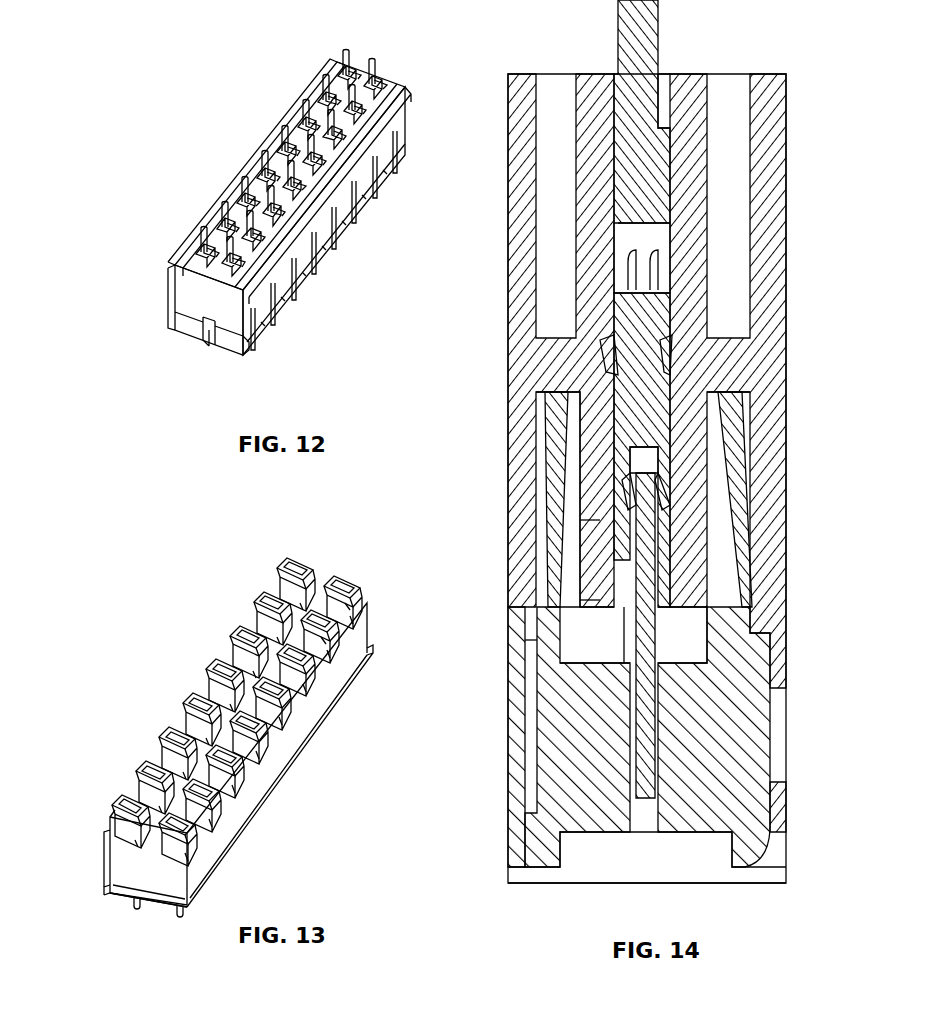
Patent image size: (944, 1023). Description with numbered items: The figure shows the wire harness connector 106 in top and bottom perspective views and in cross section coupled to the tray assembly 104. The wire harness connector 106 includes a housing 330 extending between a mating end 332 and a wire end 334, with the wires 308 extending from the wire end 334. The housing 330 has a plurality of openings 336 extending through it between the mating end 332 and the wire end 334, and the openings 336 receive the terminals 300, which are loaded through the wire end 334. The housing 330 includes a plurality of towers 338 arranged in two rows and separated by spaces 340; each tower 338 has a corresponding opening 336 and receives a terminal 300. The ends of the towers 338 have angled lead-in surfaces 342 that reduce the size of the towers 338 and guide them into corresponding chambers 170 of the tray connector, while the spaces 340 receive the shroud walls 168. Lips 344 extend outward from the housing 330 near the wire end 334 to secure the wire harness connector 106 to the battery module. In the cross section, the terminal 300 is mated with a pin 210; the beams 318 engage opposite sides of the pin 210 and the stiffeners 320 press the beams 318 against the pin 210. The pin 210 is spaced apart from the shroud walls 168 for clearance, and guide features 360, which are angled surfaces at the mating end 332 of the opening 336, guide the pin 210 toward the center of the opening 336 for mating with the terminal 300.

In FIG. 14, the tray assembly 104 is at (540, 890).
In FIG. 12, the wire harness connector 106 is at (262, 104).
In FIG. 13, the wire harness connector 106 is at (132, 697).
In FIG. 14, the wire harness connector 106 is at (597, 45).
In FIG. 14, the shroud walls 168 is at (740, 535).
In FIG. 14, the chambers 170 is at (695, 640).
In FIG. 14, the pin 210 is at (647, 632).
In FIG. 14, the terminal 300 is at (668, 372).
In FIG. 12, the wires 308 is at (340, 62).
In FIG. 13, the wires 308 is at (137, 900).
In FIG. 14, the beams 318 is at (667, 520).
In FIG. 14, the stiffeners 320 is at (670, 535).
In FIG. 12, the housing 330 is at (190, 297).
In FIG. 13, the housing 330 is at (130, 863).
In FIG. 12, the mating end 332 is at (227, 360).
In FIG. 13, the mating end 332 is at (285, 557).
In FIG. 14, the mating end 332 is at (603, 628).
In FIG. 12, the wire end 334 is at (233, 177).
In FIG. 13, the wire end 334 is at (162, 907).
In FIG. 12, the openings 336 is at (353, 67).
In FIG. 13, the openings 336 is at (343, 579).
In FIG. 14, the openings 336 is at (667, 75).
In FIG. 12, the towers 338 is at (333, 233).
In FIG. 13, the towers 338 is at (357, 595).
In FIG. 14, the towers 338 is at (598, 522).
In FIG. 12, the spaces 340 is at (303, 293).
In FIG. 13, the spaces 340 is at (325, 576).
In FIG. 12, the lead-in surfaces 342 is at (252, 352).
In FIG. 13, the lead-in surfaces 342 is at (340, 618).
In FIG. 14, the lead-in surfaces 342 is at (626, 588).
In FIG. 12, the lips 344 is at (410, 96).
In FIG. 13, the lips 344 is at (270, 802).
In FIG. 14, the guide features 360 is at (608, 614).